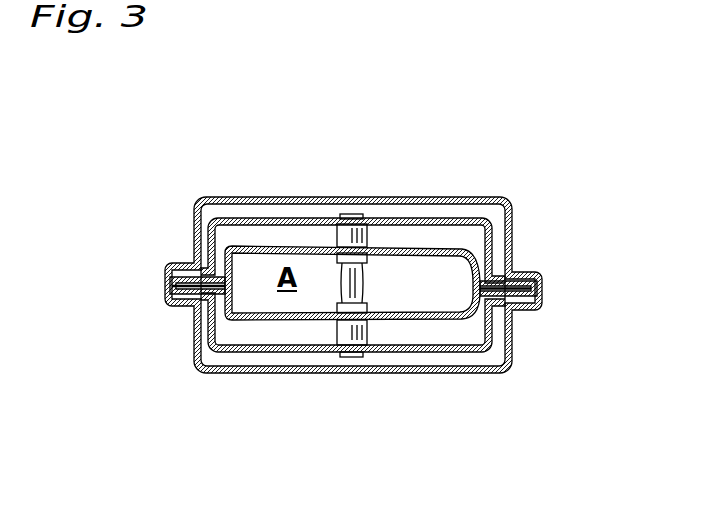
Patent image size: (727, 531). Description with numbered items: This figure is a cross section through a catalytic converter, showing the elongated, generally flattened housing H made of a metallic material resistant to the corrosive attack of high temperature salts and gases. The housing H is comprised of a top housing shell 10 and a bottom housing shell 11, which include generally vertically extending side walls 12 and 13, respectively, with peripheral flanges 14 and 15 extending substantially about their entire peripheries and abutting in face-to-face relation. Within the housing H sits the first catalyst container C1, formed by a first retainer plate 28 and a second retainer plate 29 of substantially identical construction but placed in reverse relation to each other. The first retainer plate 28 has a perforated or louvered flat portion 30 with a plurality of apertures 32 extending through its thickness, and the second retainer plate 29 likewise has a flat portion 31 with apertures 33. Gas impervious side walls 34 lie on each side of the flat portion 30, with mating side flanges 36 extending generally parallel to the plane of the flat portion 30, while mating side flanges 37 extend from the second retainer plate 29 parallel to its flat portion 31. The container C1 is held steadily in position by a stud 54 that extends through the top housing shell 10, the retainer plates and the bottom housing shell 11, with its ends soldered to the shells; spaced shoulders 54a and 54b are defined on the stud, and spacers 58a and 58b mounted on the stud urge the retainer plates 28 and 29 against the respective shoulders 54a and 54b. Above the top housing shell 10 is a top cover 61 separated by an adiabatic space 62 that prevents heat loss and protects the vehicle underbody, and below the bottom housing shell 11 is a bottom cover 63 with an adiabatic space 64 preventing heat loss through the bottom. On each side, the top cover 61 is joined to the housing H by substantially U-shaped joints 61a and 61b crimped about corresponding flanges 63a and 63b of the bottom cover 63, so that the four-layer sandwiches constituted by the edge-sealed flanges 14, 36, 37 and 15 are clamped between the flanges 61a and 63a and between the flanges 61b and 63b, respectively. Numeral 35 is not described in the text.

The top housing shell 10 is at (415, 217).
The bottom housing shell 11 is at (407, 372).
The side walls 12 is at (493, 222).
The side walls 13 is at (512, 318).
The peripheral flange 14 is at (193, 248).
The peripheral flange 15 is at (187, 312).
The first retainer plate 28 is at (290, 247).
The second retainer plate 29 is at (390, 346).
The flat portion 30 is at (445, 217).
The flat portion 31 is at (238, 350).
The apertures 32 is at (263, 217).
The apertures 33 is at (305, 318).
The side walls 34 is at (198, 200).
The housing corner 35 is at (190, 310).
The side flanges 36 is at (172, 281).
The side flanges 37 is at (167, 280).
The stud 54 is at (363, 295).
The shoulder 54a is at (370, 237).
The shoulder 54b is at (342, 330).
The spacer 58a is at (353, 215).
The spacer 58b is at (347, 357).
The top cover 61 is at (240, 197).
The U-shaped joint 61a is at (167, 292).
The U-shaped joint 61b is at (537, 305).
The adiabatic space 62 is at (500, 200).
The bottom cover 63 is at (482, 372).
The flange 63a is at (183, 307).
The flange 63b is at (518, 312).
The adiabatic space 64 is at (455, 366).
The first catalyst container C1 is at (468, 238).
The housing H is at (278, 360).